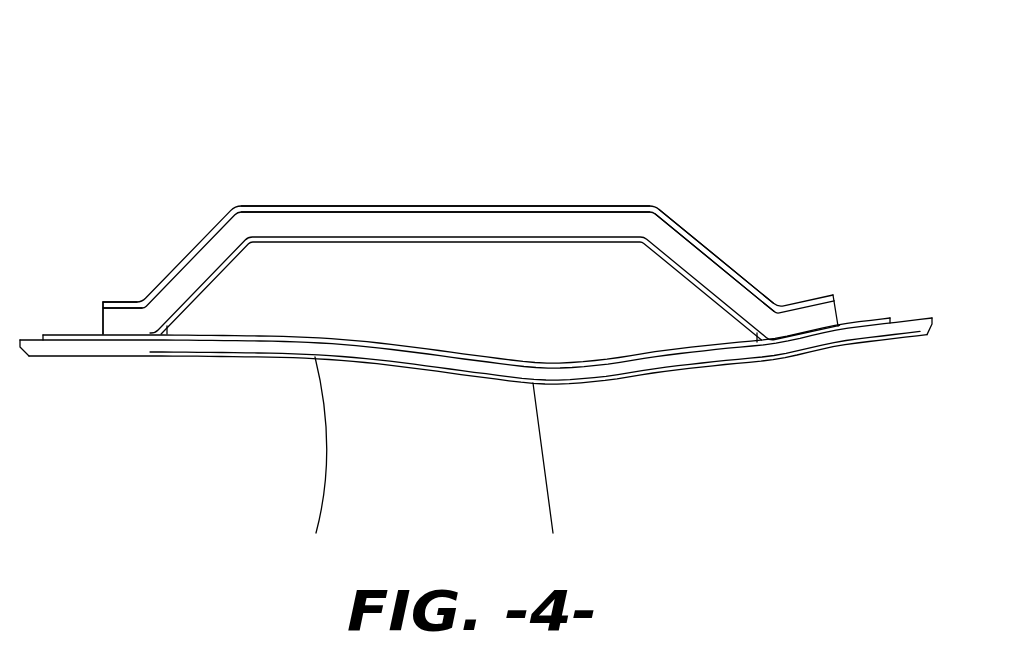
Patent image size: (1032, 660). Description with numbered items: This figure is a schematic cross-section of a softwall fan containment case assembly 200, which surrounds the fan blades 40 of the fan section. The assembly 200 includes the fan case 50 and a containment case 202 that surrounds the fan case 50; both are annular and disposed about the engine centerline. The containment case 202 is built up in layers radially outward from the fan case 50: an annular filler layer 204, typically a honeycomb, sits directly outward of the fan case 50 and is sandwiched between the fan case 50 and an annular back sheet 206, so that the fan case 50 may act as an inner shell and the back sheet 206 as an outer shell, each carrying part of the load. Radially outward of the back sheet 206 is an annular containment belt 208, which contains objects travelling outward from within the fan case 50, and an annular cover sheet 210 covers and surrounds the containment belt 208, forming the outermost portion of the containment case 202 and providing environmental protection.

The softwall fan containment case assembly 200 is at (208, 125).
The containment case 202 is at (175, 263).
The filler layer 204 is at (593, 267).
The back sheet 206 is at (405, 240).
The containment belt 208 is at (510, 223).
The cover sheet 210 is at (297, 212).
The fan case 50 is at (720, 360).
The fan blades 40 is at (530, 493).